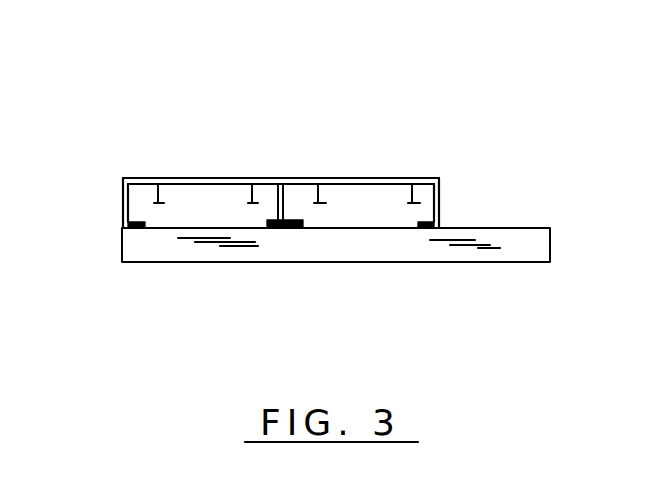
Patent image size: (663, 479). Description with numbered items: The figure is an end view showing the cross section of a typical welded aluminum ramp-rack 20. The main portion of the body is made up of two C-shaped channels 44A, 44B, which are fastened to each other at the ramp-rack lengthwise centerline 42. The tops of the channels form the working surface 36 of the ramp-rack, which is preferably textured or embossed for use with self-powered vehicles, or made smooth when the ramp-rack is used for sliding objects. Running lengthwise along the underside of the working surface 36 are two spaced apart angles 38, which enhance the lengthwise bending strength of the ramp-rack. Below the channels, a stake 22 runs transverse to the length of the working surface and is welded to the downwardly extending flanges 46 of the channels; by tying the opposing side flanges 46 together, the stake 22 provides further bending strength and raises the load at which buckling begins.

The assembly 20 is at (240, 298).
The stake 22 is at (430, 258).
The working surface 36 is at (193, 177).
The angles 38 is at (322, 192).
The ramp-rack lengthwise centerline 42 is at (286, 180).
The channel 44A is at (147, 175).
The channel 44B is at (433, 177).
The downwardly extending flanges 46 is at (108, 198).